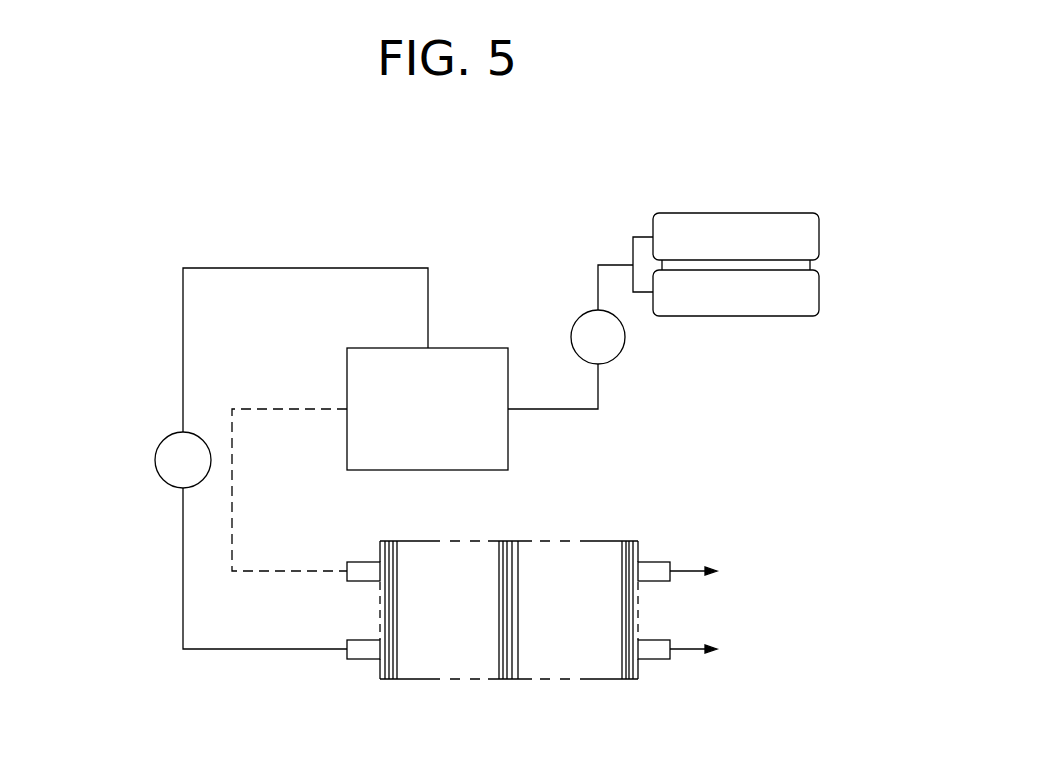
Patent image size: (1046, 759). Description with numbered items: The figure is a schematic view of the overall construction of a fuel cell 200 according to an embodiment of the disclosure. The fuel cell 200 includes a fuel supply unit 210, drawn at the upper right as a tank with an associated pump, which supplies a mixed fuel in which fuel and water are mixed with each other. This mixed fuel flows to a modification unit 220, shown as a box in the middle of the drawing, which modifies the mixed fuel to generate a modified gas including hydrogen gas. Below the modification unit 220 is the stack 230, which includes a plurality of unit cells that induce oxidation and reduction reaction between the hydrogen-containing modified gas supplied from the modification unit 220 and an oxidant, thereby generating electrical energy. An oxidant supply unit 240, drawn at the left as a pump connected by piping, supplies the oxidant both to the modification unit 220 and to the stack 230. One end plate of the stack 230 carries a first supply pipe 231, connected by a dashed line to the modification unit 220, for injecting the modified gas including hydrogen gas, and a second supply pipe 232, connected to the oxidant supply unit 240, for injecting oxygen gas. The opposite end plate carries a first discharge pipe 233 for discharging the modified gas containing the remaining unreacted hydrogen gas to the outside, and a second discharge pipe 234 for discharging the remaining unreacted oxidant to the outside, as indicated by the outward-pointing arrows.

The fuel cell 200 is at (292, 181).
The fuel supply unit 210 is at (618, 218).
The modification unit 220 is at (370, 337).
The stack 230 is at (522, 525).
The first supply pipe 231 is at (362, 562).
The second supply pipe 232 is at (362, 660).
The first discharge pipe 233 is at (657, 660).
The second discharge pipe 234 is at (657, 562).
The oxidant supply unit 240 is at (150, 430).